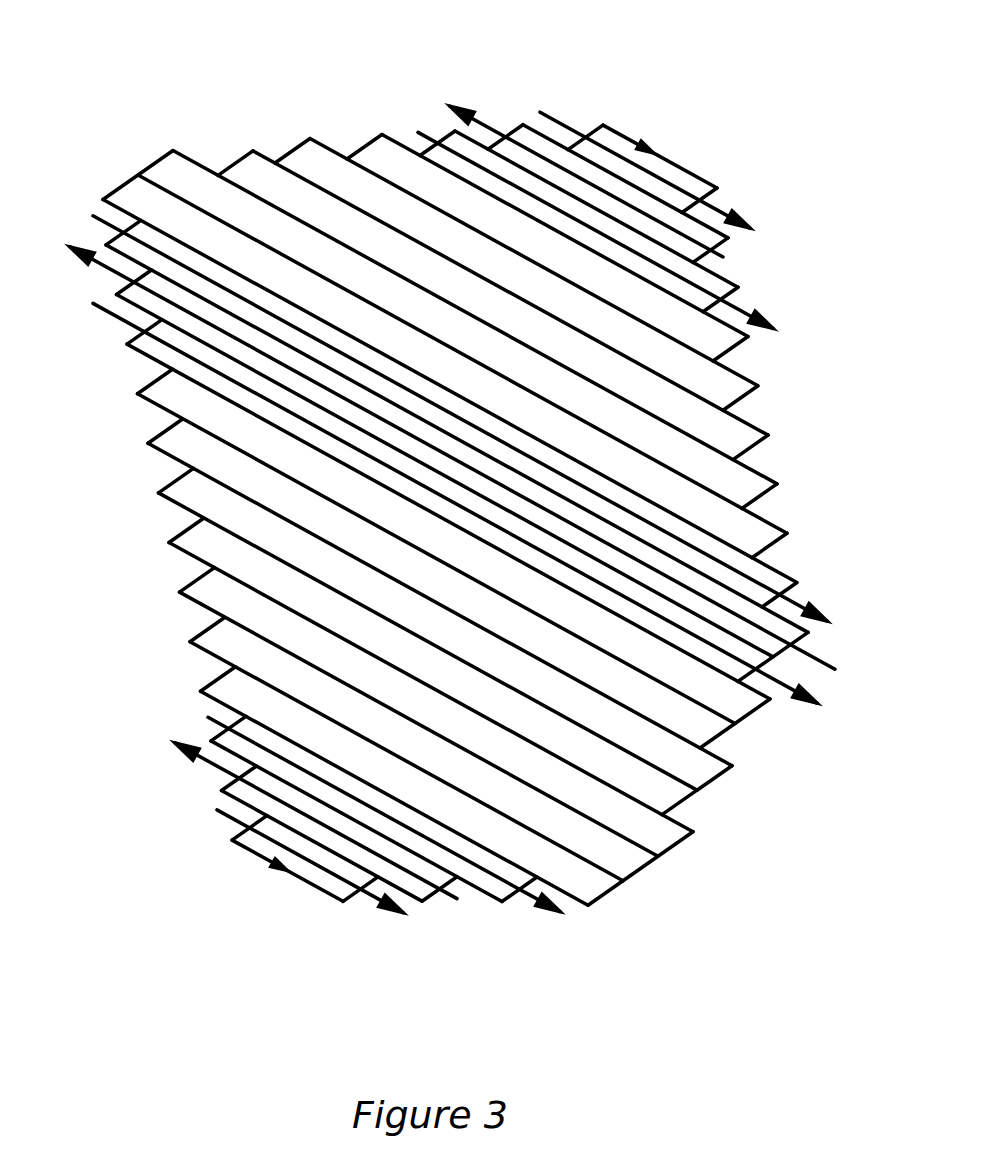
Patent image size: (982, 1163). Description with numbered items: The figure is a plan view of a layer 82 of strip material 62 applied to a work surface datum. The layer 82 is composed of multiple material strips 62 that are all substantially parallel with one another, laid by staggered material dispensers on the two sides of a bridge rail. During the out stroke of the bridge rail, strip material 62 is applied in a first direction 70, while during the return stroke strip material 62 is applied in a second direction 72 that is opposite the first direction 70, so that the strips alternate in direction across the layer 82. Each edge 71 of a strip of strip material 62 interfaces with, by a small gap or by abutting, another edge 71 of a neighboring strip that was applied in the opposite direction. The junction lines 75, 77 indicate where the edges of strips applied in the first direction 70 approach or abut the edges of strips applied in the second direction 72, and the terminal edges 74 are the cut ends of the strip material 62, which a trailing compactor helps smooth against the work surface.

The strip material 62 is at (457, 133).
The first direction 70 is at (485, 133).
The edge 71 is at (330, 147).
The second direction 72 is at (723, 213).
The terminal edge 74 is at (540, 453).
The junction line 75 is at (727, 236).
The junction line 77 is at (718, 276).
The layer 82 is at (360, 537).